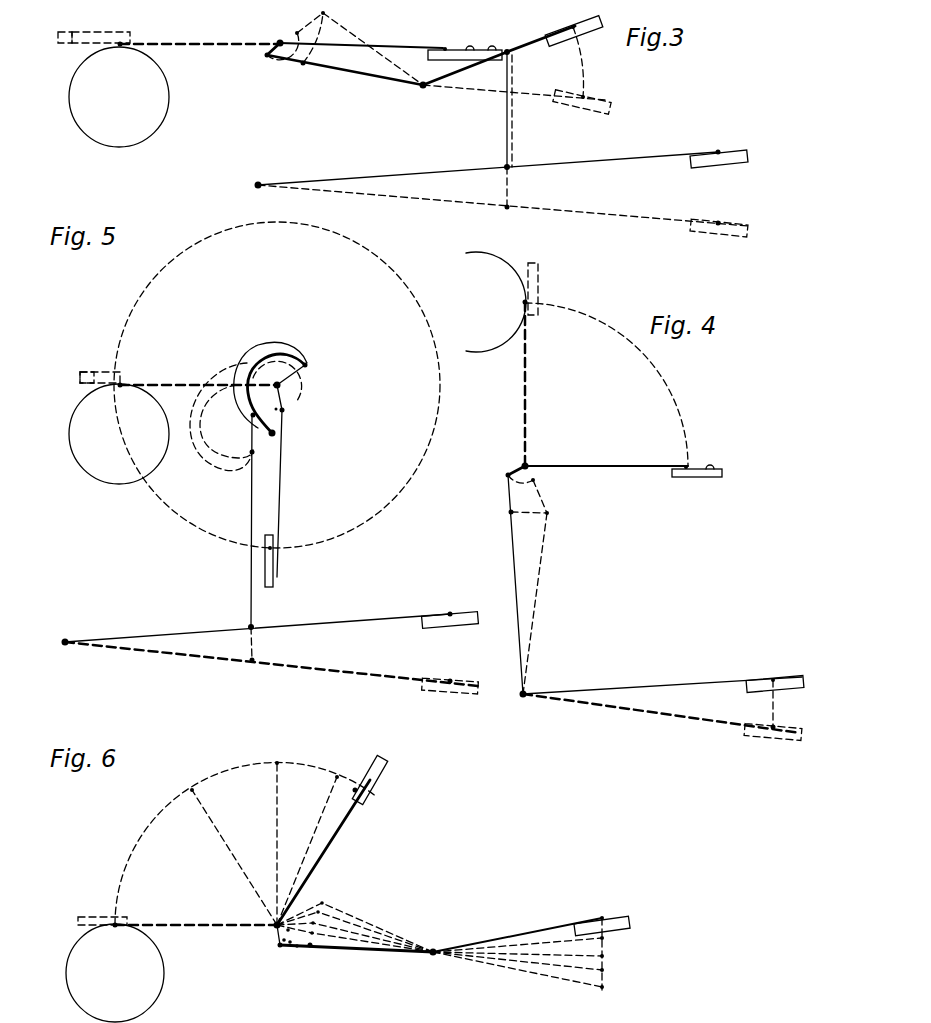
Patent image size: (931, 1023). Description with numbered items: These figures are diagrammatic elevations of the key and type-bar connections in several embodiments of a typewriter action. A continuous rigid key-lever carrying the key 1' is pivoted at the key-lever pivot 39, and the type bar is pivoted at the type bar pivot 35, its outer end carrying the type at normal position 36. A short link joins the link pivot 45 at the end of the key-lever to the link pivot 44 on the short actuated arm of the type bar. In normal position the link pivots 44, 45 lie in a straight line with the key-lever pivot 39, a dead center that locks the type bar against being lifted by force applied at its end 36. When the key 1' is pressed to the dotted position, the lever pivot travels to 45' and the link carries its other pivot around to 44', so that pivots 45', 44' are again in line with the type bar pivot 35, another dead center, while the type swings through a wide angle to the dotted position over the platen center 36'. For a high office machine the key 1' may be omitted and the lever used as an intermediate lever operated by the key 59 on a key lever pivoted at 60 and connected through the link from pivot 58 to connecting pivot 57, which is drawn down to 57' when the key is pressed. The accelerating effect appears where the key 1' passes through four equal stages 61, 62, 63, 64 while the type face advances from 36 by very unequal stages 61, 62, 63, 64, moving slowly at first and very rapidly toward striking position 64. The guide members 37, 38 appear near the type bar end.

In FIG. 3, the key 1' is at (579, 60).
In FIG. 4, the key 1' is at (774, 698).
In FIG. 6, the key 1' is at (602, 945).
In FIG. 3, the type bar pivot 35 is at (277, 42).
In FIG. 5, the type bar pivot 35 is at (277, 399).
In FIG. 4, the type bar pivot 35 is at (527, 465).
In FIG. 6, the type bar pivot 35 is at (275, 927).
In FIG. 3, the type bar end 36 is at (310, 37).
In FIG. 5, the type bar end 36 is at (195, 474).
In FIG. 4, the type bar end 36 is at (623, 370).
In FIG. 6, the type bar end 36 is at (369, 776).
In FIG. 3, the center of the platen 36' is at (119, 97).
In FIG. 5, the center of the platen 36' is at (119, 434).
In FIG. 4, the center of the platen 36' is at (496, 302).
In FIG. 6, the center of the platen 36' is at (115, 973).
In FIG. 3, the slide 37 is at (100, 40).
In FIG. 3, the slide block 38 is at (68, 36).
In FIG. 3, the key-lever pivot 39 is at (426, 88).
In FIG. 5, the key-lever pivot 39 is at (276, 435).
In FIG. 4, the key-lever pivot 39 is at (526, 692).
In FIG. 6, the key-lever pivot 39 is at (431, 955).
In FIG. 3, the link pivot 44 is at (326, 66).
In FIG. 5, the link pivot 44 is at (305, 415).
In FIG. 4, the link pivot 44 is at (495, 580).
In FIG. 6, the link pivot 44 is at (338, 955).
In FIG. 3, the link pivot in striking position 44' is at (293, 33).
In FIG. 5, the link pivot in striking position 44' is at (266, 401).
In FIG. 4, the link pivot in striking position 44' is at (541, 493).
In FIG. 3, the link pivot 45 is at (316, 52).
In FIG. 5, the link pivot 45 is at (289, 387).
In FIG. 4, the link pivot 45 is at (508, 513).
In FIG. 6, the link pivot 45 is at (315, 957).
In FIG. 3, the link pivot in striking position 45' is at (372, 46).
In FIG. 5, the link pivot in striking position 45' is at (210, 417).
In FIG. 4, the link pivot in striking position 45' is at (555, 599).
In FIG. 3, the connecting pivot 57 is at (539, 96).
In FIG. 5, the connecting pivot 57 is at (233, 520).
In FIG. 5, the connecting pivot in striking position 57' is at (235, 447).
In FIG. 3, the link pivot 58 is at (511, 168).
In FIG. 5, the link pivot 58 is at (255, 625).
In FIG. 3, the key 59 is at (720, 152).
In FIG. 5, the key 59 is at (452, 613).
In FIG. 3, the key lever pivot 60 is at (260, 183).
In FIG. 5, the key lever pivot 60 is at (68, 640).
In FIG. 6, the first stage 61 is at (337, 775).
In FIG. 6, the second stage 62 is at (625, 958).
In FIG. 6, the third stage 63 is at (191, 788).
In FIG. 6, the fourth stage 64 is at (113, 923).